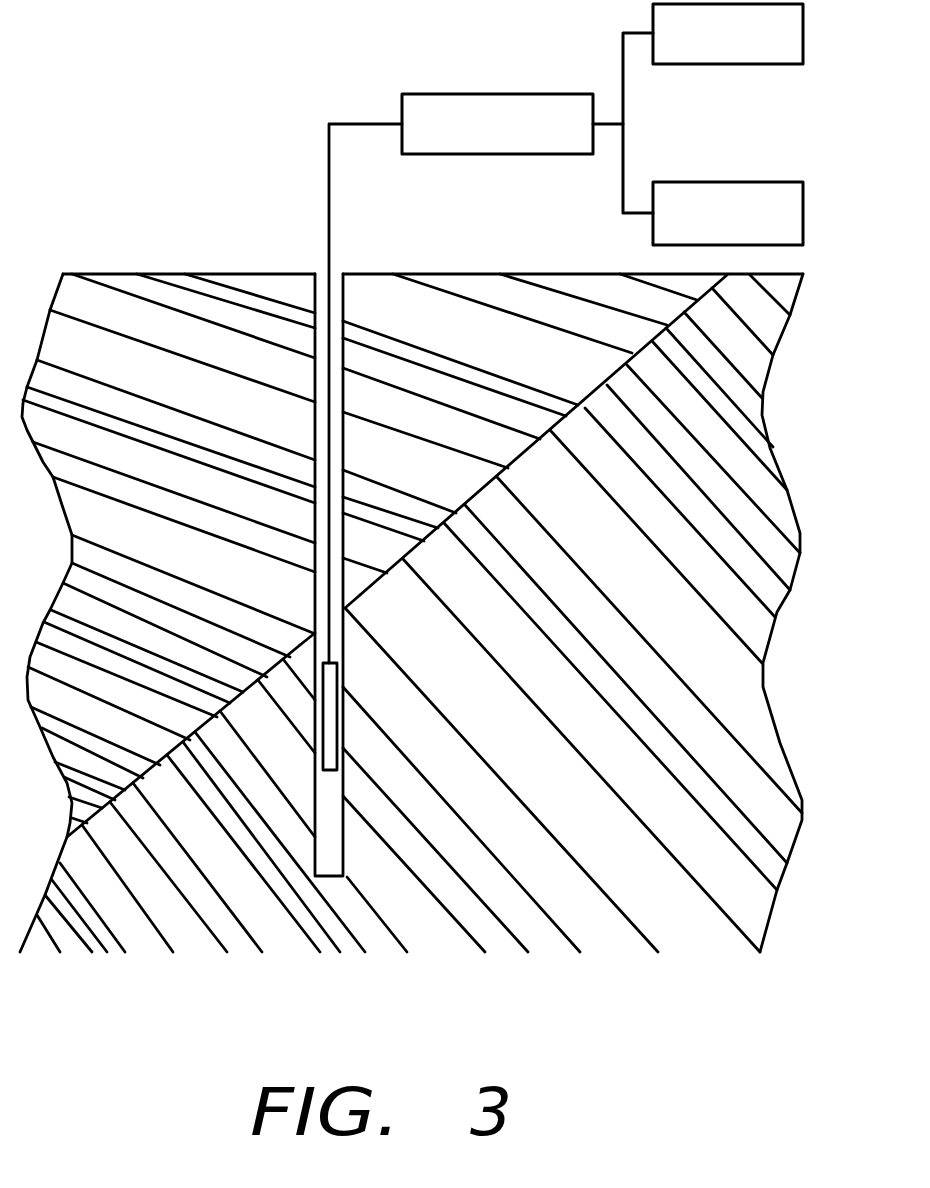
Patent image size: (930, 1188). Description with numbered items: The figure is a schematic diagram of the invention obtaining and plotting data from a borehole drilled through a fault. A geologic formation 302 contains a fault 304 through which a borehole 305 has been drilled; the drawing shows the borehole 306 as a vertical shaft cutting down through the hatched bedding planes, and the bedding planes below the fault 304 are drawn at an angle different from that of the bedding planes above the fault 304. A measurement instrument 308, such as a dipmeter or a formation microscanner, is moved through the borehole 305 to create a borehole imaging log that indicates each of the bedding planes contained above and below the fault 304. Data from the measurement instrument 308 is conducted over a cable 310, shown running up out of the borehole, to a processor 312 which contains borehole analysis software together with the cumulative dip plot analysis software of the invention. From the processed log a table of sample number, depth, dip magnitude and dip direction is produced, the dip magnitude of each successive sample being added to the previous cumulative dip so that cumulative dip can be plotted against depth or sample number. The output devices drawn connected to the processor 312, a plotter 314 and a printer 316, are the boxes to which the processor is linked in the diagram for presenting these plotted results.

The geologic formation 302 is at (468, 336).
The fault 304 is at (513, 463).
The borehole 305 is at (330, 572).
The borehole 306 is at (343, 473).
The measurement instrument 308 is at (329, 710).
The cable 310 is at (329, 259).
The processor 312 is at (445, 155).
The plotter 314 is at (685, 65).
The printer 316 is at (690, 182).